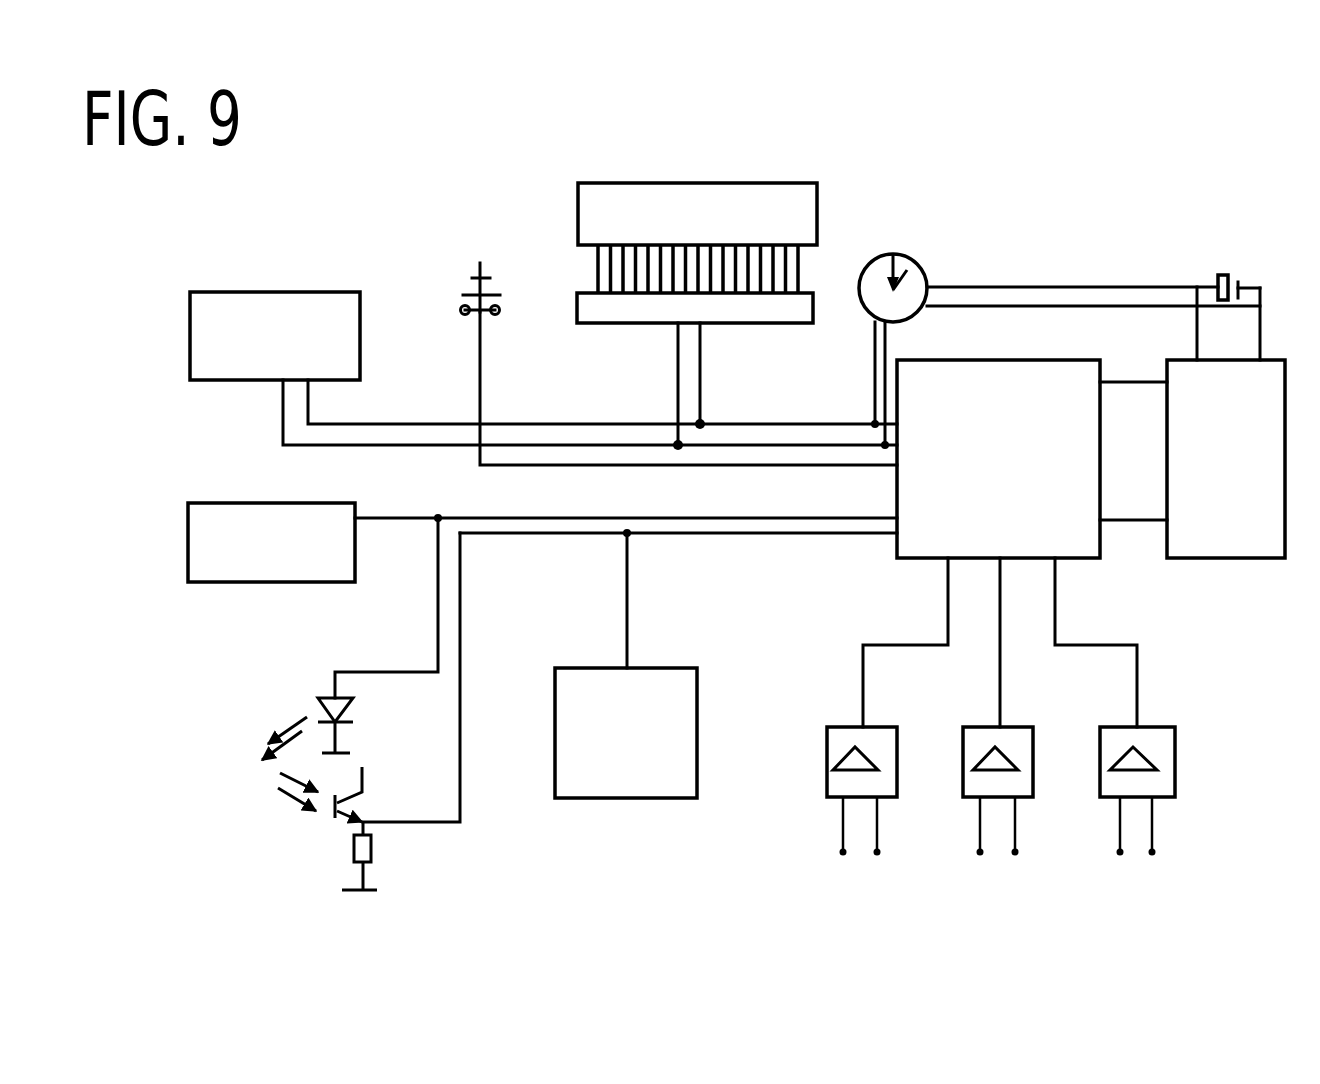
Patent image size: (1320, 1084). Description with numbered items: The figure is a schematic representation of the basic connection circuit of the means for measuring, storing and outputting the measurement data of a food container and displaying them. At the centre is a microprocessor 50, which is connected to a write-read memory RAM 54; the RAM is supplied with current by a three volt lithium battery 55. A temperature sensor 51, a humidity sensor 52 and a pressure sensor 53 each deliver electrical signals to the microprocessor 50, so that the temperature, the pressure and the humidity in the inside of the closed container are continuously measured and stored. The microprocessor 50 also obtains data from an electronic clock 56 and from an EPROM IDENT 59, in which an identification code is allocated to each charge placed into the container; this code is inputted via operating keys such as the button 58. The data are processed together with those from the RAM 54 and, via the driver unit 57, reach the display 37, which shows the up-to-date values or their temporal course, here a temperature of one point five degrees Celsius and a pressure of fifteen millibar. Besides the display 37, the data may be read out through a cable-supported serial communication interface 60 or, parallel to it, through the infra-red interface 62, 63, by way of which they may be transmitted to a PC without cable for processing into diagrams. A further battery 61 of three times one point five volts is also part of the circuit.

The display 37 is at (797, 193).
The driver unit 57 is at (750, 312).
The electronic clock 56 is at (908, 262).
The 3 Volt lithium battery 55 is at (1223, 275).
The button 58 is at (480, 263).
The EPROM IDENT 59 is at (296, 361).
The RS 232 communication interface 60 is at (296, 566).
The battery 3×1.5 V 61 is at (643, 760).
The microprocessor 50 is at (1018, 540).
The RAM 54 is at (1257, 540).
The temperature sensor 51 is at (842, 782).
The humidity sensor 52 is at (978, 783).
The pressure sensor 53 is at (1117, 782).
The infra-red interface 62 is at (318, 700).
The infra-red interface 63 is at (343, 823).